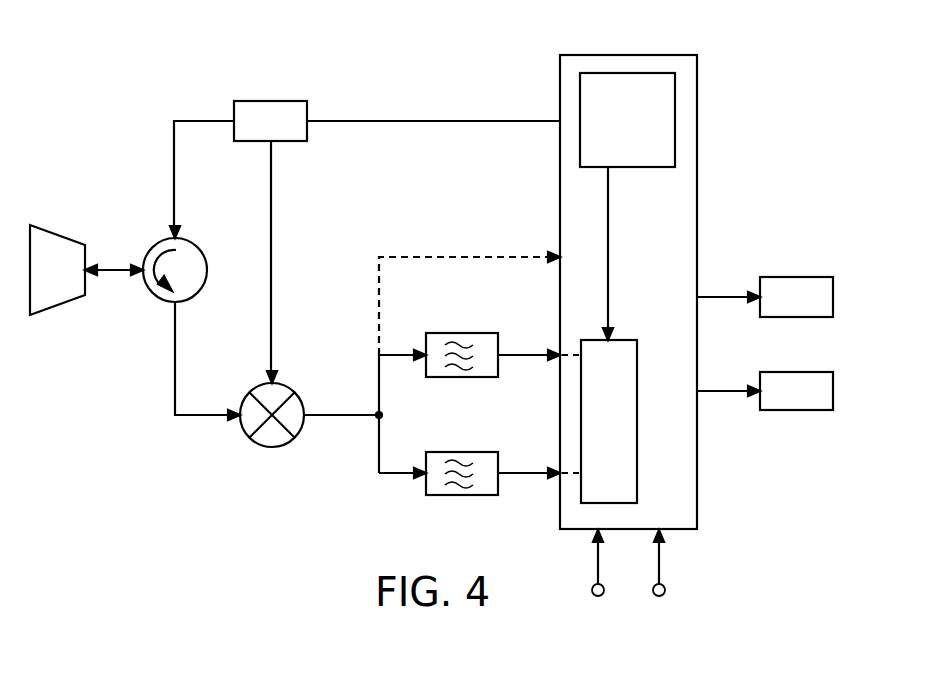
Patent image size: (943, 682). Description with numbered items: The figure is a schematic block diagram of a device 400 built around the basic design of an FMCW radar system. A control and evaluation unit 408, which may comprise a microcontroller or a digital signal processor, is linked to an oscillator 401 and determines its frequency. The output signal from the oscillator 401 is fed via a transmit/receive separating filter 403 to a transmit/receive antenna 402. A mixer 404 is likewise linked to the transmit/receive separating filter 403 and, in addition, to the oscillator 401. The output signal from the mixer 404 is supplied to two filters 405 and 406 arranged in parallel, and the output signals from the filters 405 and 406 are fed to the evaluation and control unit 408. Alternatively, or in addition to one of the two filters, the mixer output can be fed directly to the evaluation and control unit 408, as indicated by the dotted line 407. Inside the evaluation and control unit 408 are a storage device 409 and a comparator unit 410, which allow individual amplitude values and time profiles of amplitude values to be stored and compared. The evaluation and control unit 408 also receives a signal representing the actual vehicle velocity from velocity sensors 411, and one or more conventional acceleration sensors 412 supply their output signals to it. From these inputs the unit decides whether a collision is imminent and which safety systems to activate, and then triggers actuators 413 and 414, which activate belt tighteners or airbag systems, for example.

The device 400 is at (145, 86).
The oscillator 401 is at (268, 100).
The transmit/receive antenna 402 is at (48, 238).
The transmit/receive separating filter 403 is at (193, 262).
The mixer 404 is at (293, 406).
The filter 405 is at (487, 345).
The filter 406 is at (487, 466).
The dotted line 407 is at (415, 254).
The control and evaluation unit 408 is at (625, 62).
The storage device 409 is at (636, 158).
The comparator unit 410 is at (627, 378).
The velocity sensors 411 is at (596, 597).
The acceleration sensors 412 is at (661, 597).
The actuator 413 is at (786, 284).
The actuator 414 is at (806, 400).